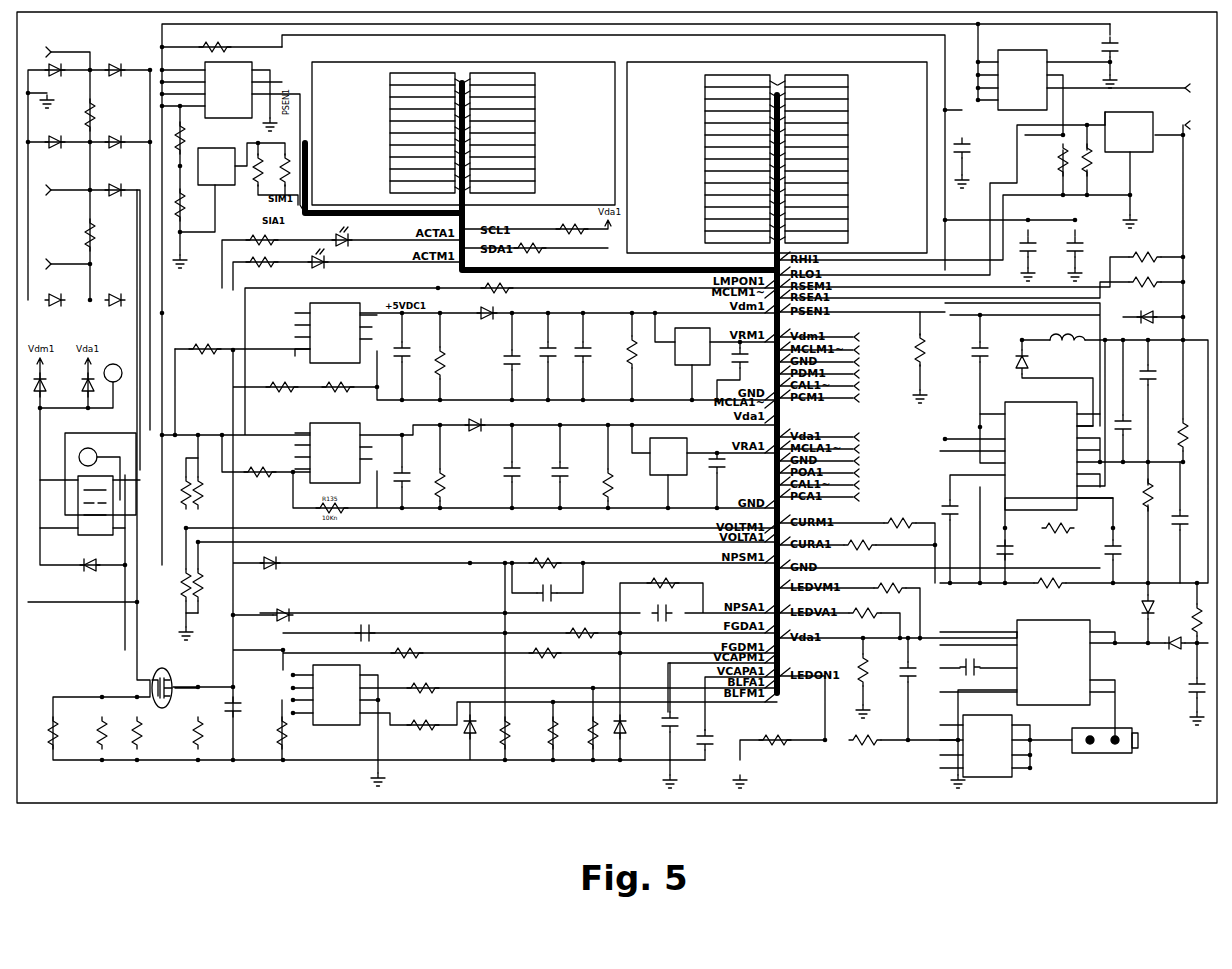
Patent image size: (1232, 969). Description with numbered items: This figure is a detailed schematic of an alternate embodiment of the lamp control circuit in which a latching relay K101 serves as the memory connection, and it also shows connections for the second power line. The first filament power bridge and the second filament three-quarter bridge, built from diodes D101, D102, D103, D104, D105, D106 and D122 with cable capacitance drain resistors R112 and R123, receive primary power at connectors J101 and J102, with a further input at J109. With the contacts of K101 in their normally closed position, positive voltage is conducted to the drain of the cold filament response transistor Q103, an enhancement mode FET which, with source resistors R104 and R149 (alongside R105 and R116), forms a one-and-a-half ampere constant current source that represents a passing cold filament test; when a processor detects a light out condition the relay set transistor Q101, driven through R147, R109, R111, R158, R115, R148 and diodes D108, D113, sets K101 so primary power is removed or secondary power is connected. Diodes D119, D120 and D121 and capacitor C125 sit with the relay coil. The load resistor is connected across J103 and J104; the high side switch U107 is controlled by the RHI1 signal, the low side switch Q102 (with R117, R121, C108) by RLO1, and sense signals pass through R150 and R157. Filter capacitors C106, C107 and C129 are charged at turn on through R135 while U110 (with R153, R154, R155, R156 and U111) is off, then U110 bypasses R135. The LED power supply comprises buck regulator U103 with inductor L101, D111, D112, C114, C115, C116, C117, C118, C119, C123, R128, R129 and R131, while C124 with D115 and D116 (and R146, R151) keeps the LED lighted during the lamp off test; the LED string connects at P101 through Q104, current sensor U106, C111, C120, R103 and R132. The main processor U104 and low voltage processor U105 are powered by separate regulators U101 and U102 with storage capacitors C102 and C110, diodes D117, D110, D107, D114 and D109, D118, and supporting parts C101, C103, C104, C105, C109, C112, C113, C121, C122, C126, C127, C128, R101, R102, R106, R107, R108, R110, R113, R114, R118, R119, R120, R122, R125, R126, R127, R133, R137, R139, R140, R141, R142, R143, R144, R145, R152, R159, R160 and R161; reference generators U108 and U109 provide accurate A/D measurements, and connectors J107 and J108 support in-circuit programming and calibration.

The primary power connector J101 is at (43, 45).
The primary power connector J102 is at (45, 187).
The connector PIC1 J109 is at (45, 260).
The load resistor connector J103 is at (1194, 83).
The load resistor connector J104 is at (1192, 121).
The programming connector J107 is at (860, 363).
The programming connector J108 is at (860, 462).
The diode D101 is at (56, 66).
The diode D102 is at (116, 66).
The diode D103 is at (56, 138).
The diode D104 is at (116, 138).
The diode D105 is at (56, 296).
The diode D106 is at (116, 296).
The diode D122 is at (116, 186).
The zener diode D120 is at (49, 386).
The zener diode D121 is at (97, 386).
The diode D119 is at (98, 562).
The LED D109 is at (349, 236).
The LED D118 is at (325, 258).
The diode D117 is at (479, 311).
The diode D110 is at (467, 422).
The diode D107 is at (277, 560).
The diode D114 is at (270, 613).
The zener diode D108 is at (463, 729).
The zener diode D113 is at (613, 729).
The zener diode D111 is at (1029, 360).
The diode D112 is at (1141, 313).
The diode D115 is at (1155, 606).
The diode D116 is at (1171, 631).
The resistor R101 is at (180, 484).
The resistor R102 is at (176, 570).
The resistor R103 is at (775, 740).
The source resistor R104 is at (127, 733).
The resistor R105 is at (44, 733).
The resistor R106 is at (497, 288).
The resistor R107 is at (623, 356).
The resistor R108 is at (450, 356).
The resistor R109 is at (423, 725).
The resistor R110 is at (205, 343).
The resistor R111 is at (289, 733).
The resistor R112 is at (82, 115).
The resistor R113 is at (545, 653).
The resistor R114 is at (450, 466).
The resistor R115 is at (543, 733).
The resistor R116 is at (187, 733).
The resistor R117 is at (1054, 160).
The resistor R118 is at (599, 466).
The resistor R119 is at (910, 350).
The resistor R120 is at (338, 386).
The resistor R121 is at (1094, 160).
The resistor R122 is at (262, 262).
The resistor R123 is at (82, 235).
The resistor R125 is at (274, 239).
The resistor R126 is at (572, 229).
The resistor R127 is at (530, 249).
The resistor R128 is at (1137, 495).
The resistor R129 is at (1174, 435).
The resistor R131 is at (1058, 528).
The resistor R132 is at (865, 740).
The resistor R133 is at (282, 386).
The surge limit resistor R135 is at (213, 38).
The resistor R137 is at (258, 467).
The resistor R139 is at (206, 473).
The resistor R140 is at (206, 577).
The resistor R141 is at (900, 523).
The resistor R142 is at (860, 545).
The resistor R143 is at (582, 633).
The resistor R144 is at (890, 588).
The resistor R145 is at (865, 613).
The resistor R146 is at (1190, 620).
The resistor R147 is at (423, 688).
The resistor R148 is at (582, 733).
The source resistor R149 is at (92, 733).
The sense resistor R150 is at (1145, 257).
The resistor R151 is at (1050, 583).
The resistor R152 is at (862, 670).
The resistor R153 is at (180, 205).
The resistor R154 is at (180, 138).
The resistor R155 is at (254, 170).
The resistor R156 is at (284, 170).
The sense resistor R157 is at (1145, 282).
The resistor R158 is at (505, 733).
The resistor R159 is at (407, 653).
The resistor R160 is at (663, 584).
The resistor R161 is at (545, 563).
The capacitor C101 is at (403, 356).
The energy storage capacitor C102 is at (519, 356).
The capacitor C103 is at (554, 356).
The capacitor C104 is at (667, 711).
The capacitor C105 is at (547, 583).
The filter capacitor C106 is at (1033, 246).
The filter capacitor C107 is at (1080, 246).
The capacitor C108 is at (1117, 48).
The capacitor C109 is at (408, 470).
The energy storage capacitor C110 is at (519, 466).
The capacitor C111 is at (970, 667).
The capacitor C112 is at (566, 466).
The capacitor C113 is at (589, 356).
The capacitor C114 is at (980, 352).
The capacitor C115 is at (1154, 380).
The capacitor C116 is at (1124, 425).
The capacitor C117 is at (956, 513).
The capacitor C118 is at (1114, 548).
The capacitor C119 is at (1005, 548).
The capacitor C120 is at (903, 673).
The capacitor C121 is at (661, 614).
The capacitor C122 is at (702, 743).
The capacitor C123 is at (1187, 522).
The LED energy storage capacitor C124 is at (1177, 687).
The capacitor C125 is at (239, 712).
The capacitor C126 is at (738, 370).
The capacitor C127 is at (718, 479).
The capacitor C128 is at (364, 632).
The filter capacitor C129 is at (977, 147).
The voltage regulator U101 is at (336, 327).
The voltage regulator U102 is at (333, 447).
The buck switching regulator U103 is at (1046, 450).
The main processor U104 is at (777, 152).
The low voltage processor U105 is at (463, 128).
The current sensor U106 is at (1021, 657).
The high side switch U107 is at (1015, 74).
The A/D reference voltage generator U108 is at (716, 356).
The A/D reference voltage generator U109 is at (704, 466).
The surge current limit switch U110 is at (228, 84).
The voltage detector MCP112 U111 is at (216, 165).
The relay set transistor Q101 is at (326, 689).
The low side switch Q102 is at (1130, 131).
The cold filament response transistor Q103 is at (162, 683).
The dual MOSFET Q104 is at (986, 740).
The latching relay K101 is at (90, 491).
The inductor L101 is at (1067, 341).
The power connector P101 is at (1105, 747).